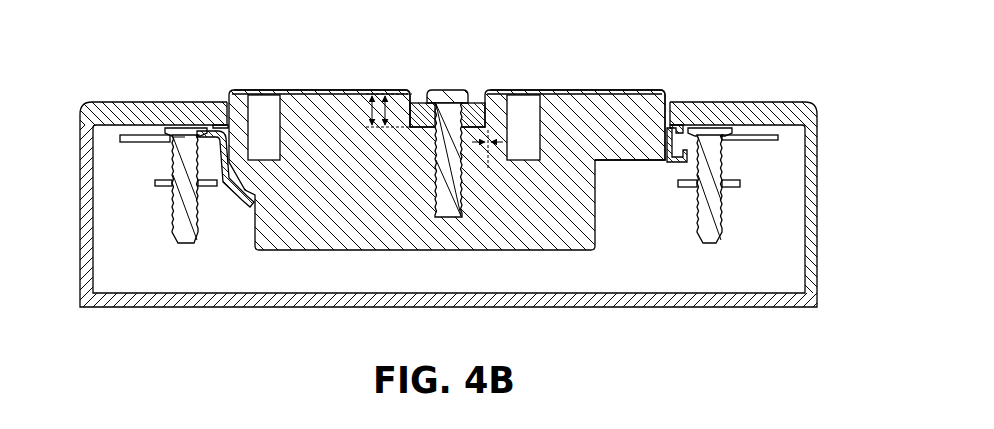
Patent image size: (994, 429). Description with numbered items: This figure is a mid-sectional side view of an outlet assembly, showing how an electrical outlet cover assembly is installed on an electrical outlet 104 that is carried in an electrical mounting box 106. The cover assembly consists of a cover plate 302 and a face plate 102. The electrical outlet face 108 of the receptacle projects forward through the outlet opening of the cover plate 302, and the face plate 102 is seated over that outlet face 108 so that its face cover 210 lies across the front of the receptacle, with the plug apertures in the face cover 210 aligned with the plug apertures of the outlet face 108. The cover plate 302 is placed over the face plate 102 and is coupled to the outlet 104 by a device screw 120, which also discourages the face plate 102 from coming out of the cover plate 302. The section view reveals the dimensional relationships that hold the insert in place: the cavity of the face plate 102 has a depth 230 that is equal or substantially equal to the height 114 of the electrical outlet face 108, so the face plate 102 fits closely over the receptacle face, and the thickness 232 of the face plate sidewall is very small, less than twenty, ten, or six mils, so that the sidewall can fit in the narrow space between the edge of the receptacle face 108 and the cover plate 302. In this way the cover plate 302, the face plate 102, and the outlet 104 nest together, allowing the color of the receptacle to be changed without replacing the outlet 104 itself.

The face plate 102 is at (447, 145).
The electrical outlet 104 is at (585, 103).
The electrical mounting box 106 is at (690, 308).
The electrical outlet face 108 is at (334, 110).
The height of the electrical outlet face 114 is at (398, 90).
The device screw 120 is at (450, 90).
The face cover 210 is at (634, 90).
The depth of the cavity 230 is at (371, 113).
The thickness of the sidewall 232 is at (488, 166).
The cover plate 302 is at (753, 102).